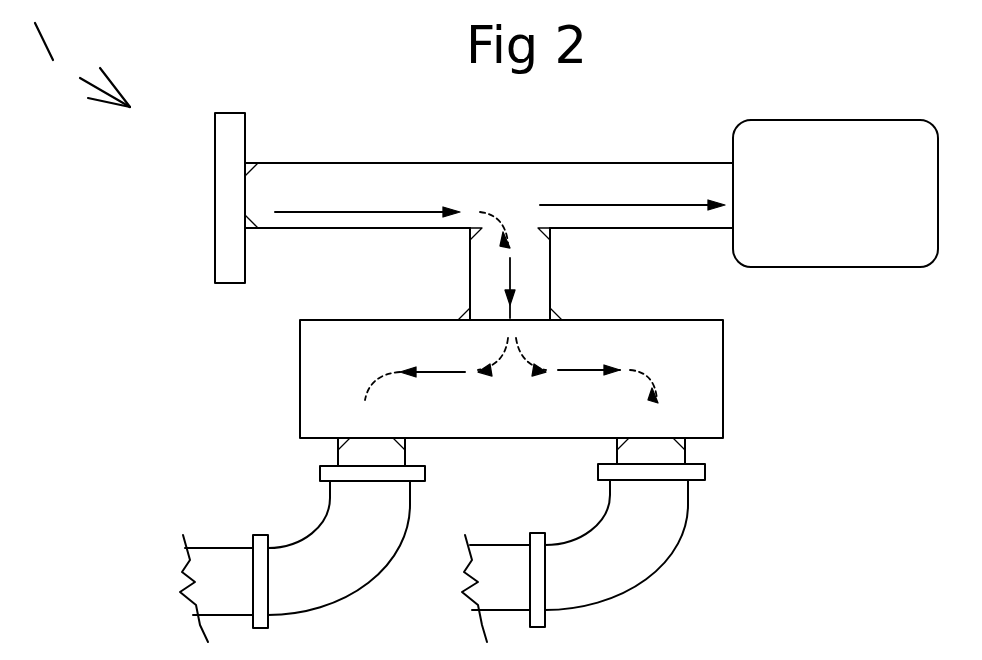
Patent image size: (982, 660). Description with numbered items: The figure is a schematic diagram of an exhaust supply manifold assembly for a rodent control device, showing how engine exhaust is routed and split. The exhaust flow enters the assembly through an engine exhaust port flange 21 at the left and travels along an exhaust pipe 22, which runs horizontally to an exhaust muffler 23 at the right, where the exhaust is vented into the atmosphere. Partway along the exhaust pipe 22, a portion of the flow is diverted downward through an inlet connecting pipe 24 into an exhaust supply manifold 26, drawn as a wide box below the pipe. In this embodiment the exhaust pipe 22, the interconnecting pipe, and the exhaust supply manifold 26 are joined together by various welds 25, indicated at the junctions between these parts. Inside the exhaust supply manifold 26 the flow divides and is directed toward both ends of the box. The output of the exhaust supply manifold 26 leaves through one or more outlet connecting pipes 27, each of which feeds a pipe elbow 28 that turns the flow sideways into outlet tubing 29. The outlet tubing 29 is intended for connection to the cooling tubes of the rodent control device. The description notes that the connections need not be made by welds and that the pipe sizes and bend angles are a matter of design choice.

The engine exhaust port flange 21 is at (255, 142).
The exhaust pipe 22 is at (398, 155).
The exhaust muffler 23 is at (826, 118).
The inlet connecting pipe 24 is at (463, 273).
The welds 25 is at (565, 308).
The exhaust supply manifold 26 is at (297, 372).
The outlet connecting pipes 27 is at (335, 453).
The pipe elbow 28 is at (310, 518).
The outlet tubing 29 is at (220, 548).